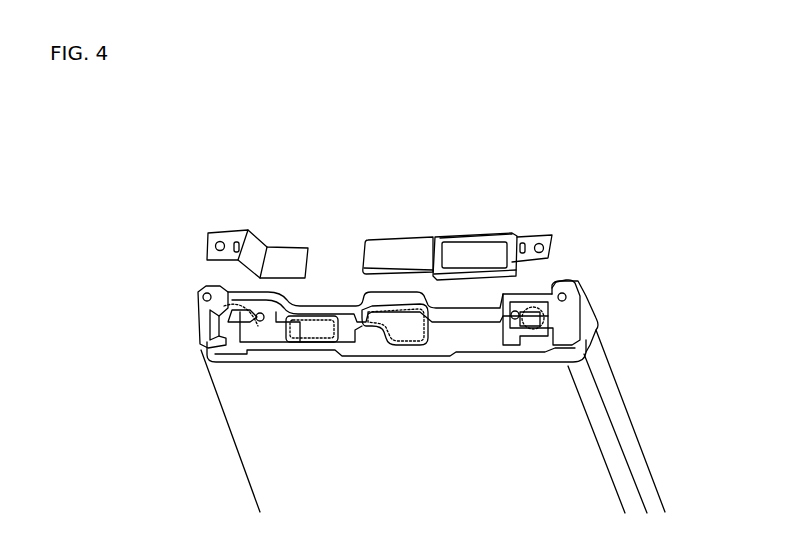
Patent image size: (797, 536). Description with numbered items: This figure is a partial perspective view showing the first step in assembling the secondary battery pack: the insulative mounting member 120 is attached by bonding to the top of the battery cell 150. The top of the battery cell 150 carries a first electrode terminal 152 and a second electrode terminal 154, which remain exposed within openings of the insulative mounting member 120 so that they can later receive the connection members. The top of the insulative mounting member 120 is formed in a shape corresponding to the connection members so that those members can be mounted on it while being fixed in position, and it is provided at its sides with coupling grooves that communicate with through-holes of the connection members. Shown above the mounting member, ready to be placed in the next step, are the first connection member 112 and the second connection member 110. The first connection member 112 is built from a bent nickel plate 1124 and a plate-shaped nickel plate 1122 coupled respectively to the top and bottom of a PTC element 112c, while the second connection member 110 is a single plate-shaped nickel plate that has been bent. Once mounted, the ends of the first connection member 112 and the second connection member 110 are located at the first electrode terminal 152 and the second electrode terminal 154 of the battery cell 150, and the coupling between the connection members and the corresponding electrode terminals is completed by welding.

The second connection member 110 is at (272, 243).
The first connection member 112 is at (468, 225).
The PTC element 112c is at (465, 230).
The plate-shaped nickel plate 1122 is at (397, 253).
The bent nickel plate 1124 is at (487, 253).
The insulative mounting member 120 is at (178, 307).
The battery cell 150 is at (232, 445).
The first electrode terminal 152 is at (402, 330).
The second electrode terminal 154 is at (312, 330).